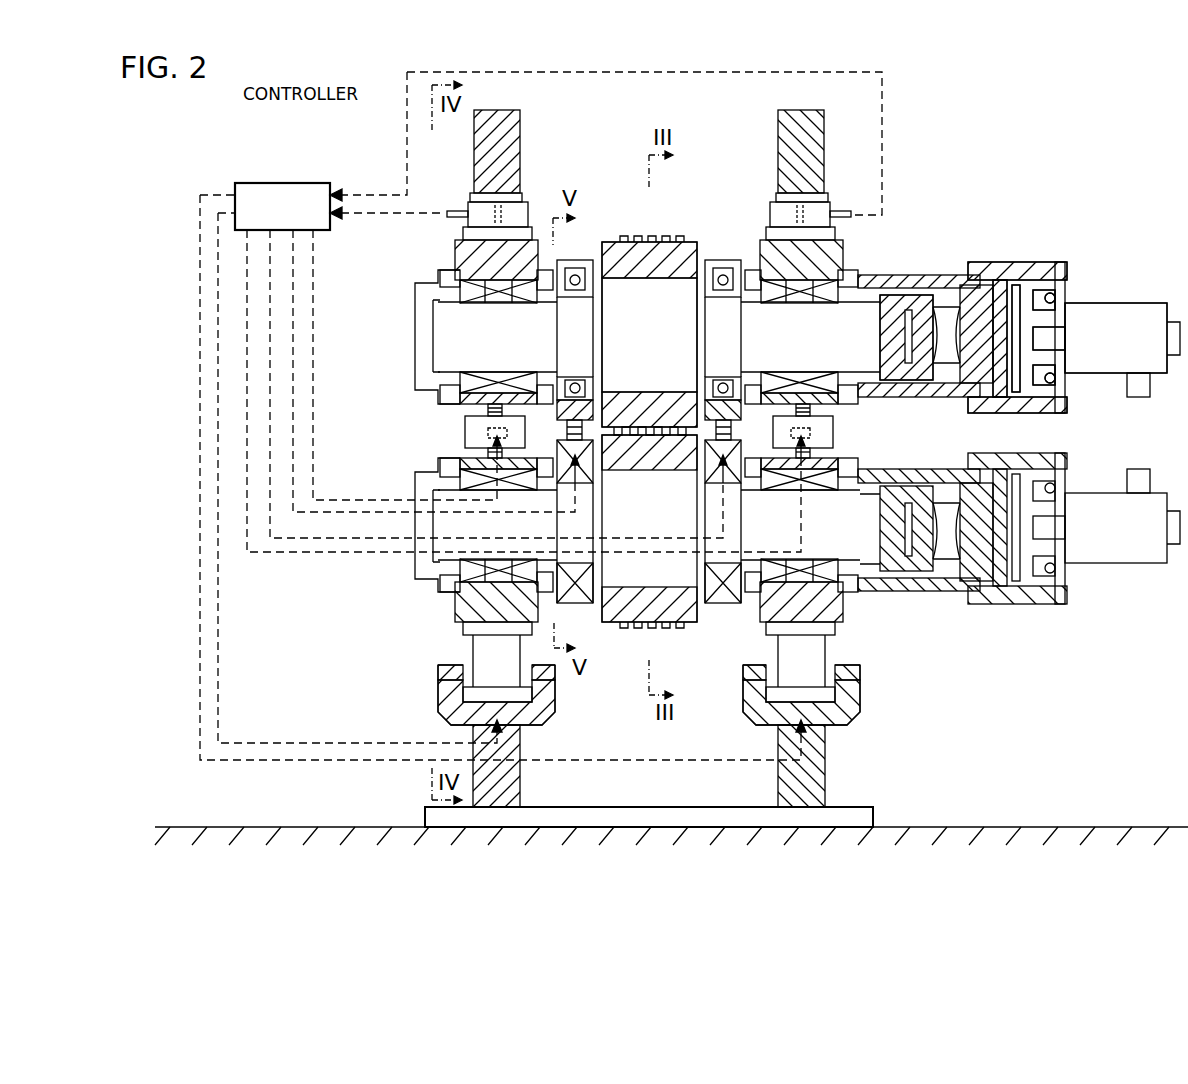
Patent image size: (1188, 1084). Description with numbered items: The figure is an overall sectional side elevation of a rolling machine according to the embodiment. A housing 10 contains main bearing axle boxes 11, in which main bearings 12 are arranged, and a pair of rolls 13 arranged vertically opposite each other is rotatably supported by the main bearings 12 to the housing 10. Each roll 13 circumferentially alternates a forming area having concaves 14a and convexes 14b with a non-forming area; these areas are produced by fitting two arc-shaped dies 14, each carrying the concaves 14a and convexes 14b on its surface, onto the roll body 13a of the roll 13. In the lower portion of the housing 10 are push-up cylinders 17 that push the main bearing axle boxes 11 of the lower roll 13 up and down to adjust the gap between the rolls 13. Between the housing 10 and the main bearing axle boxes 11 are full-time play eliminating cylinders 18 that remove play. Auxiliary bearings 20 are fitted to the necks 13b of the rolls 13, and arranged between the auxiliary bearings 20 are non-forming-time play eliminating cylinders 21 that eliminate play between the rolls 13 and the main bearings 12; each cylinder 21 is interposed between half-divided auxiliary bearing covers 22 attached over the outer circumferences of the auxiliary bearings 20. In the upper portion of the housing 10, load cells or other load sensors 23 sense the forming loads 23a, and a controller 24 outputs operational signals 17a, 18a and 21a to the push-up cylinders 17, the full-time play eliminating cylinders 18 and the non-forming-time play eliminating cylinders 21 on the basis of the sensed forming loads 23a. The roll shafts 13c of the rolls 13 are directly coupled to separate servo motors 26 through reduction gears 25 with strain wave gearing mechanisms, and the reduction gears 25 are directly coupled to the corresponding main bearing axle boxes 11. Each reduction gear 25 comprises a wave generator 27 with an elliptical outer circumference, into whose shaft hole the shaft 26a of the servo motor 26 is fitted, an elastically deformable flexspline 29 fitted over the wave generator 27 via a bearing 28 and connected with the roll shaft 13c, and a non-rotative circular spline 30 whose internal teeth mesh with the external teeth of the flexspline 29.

The housing 10 is at (520, 112).
The main bearing axle box 11 is at (460, 250).
The main bearing 12 is at (433, 300).
The roll 13 is at (657, 429).
The roll body 13a is at (666, 298).
The neck 13b is at (598, 300).
The roll shaft 13c is at (893, 320).
The arc-shaped die 14 is at (674, 240).
The concave 14a is at (658, 242).
The convex 14b is at (640, 240).
The push-up cylinder 17 is at (432, 700).
The operational signal 17a is at (285, 743).
The full-time play eliminating cylinder 18 is at (478, 436).
The operational signal 18a is at (315, 478).
The auxiliary bearing 20 is at (580, 262).
The non-forming-time play eliminating cylinder 21 is at (560, 458).
The operational signal 21a is at (330, 512).
The auxiliary bearing cover 22 is at (565, 262).
The load sensor 23 is at (528, 215).
The forming load 23a is at (882, 125).
The controller 24 is at (281, 183).
The reduction gear 25 is at (990, 255).
The servo motor 26 is at (1156, 297).
The shaft 26a is at (1055, 338).
The wave generator 27 is at (1060, 305).
The bearing 28 is at (1060, 380).
The flexspline 29 is at (1000, 280).
The circular spline 30 is at (1022, 280).